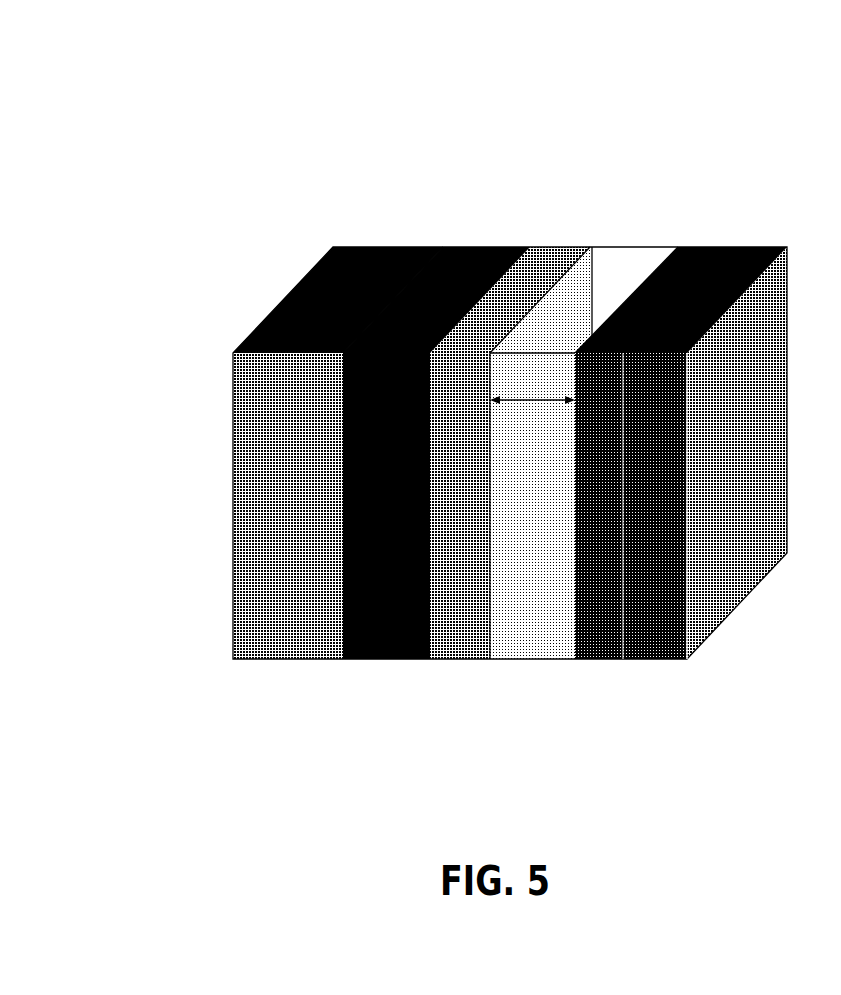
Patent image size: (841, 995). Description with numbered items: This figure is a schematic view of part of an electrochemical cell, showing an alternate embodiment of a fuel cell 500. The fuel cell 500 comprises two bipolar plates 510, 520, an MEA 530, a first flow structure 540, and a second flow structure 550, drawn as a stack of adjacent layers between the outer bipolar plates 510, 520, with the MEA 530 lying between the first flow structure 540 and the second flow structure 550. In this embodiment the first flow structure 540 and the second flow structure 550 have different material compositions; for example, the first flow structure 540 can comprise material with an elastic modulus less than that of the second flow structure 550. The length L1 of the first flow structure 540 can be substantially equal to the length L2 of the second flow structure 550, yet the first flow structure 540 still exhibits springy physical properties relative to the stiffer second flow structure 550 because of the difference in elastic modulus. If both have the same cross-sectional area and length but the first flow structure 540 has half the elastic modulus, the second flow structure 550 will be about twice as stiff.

The fuel cell 500 is at (181, 114).
The bipolar plate 510 is at (621, 688).
The bipolar plate 520 is at (283, 688).
The MEA 530 is at (463, 688).
The first flow structure 540 is at (544, 688).
The second flow structure 550 is at (391, 688).
The length of first flow structure L1 is at (541, 386).
The length of second flow structure L2 is at (443, 249).